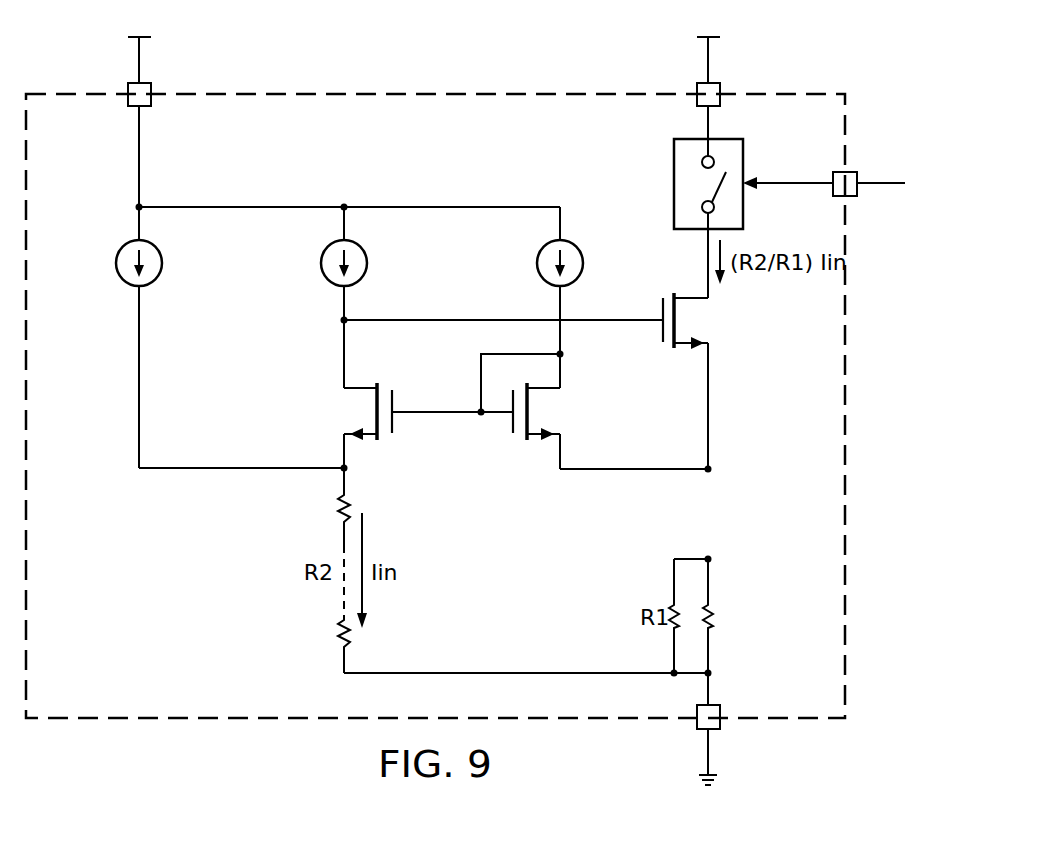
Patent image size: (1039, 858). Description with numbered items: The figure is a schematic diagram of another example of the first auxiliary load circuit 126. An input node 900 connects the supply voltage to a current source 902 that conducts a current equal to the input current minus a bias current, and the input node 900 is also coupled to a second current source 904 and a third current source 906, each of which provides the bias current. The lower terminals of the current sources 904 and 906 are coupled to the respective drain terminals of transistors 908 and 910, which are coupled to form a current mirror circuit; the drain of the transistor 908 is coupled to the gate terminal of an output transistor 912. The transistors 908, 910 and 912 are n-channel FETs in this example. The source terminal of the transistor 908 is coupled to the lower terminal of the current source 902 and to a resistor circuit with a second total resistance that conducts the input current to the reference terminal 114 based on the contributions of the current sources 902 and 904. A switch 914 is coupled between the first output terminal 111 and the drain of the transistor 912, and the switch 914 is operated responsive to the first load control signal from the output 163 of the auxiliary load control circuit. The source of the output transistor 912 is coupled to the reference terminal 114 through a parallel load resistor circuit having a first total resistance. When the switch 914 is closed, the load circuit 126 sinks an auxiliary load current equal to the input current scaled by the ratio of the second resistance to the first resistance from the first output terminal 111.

The first auxiliary load circuit 126 is at (369, 90).
The input node 900 is at (139, 155).
The current source 902 is at (116, 262).
The second current source 904 is at (321, 262).
The third current source 906 is at (537, 262).
The transistor 908 is at (394, 398).
The transistor 910 is at (511, 425).
The output transistor 912 is at (661, 330).
The switch 914 is at (674, 172).
The first output terminal 111 is at (709, 60).
The output 163 is at (878, 183).
The reference terminal 114 is at (709, 752).